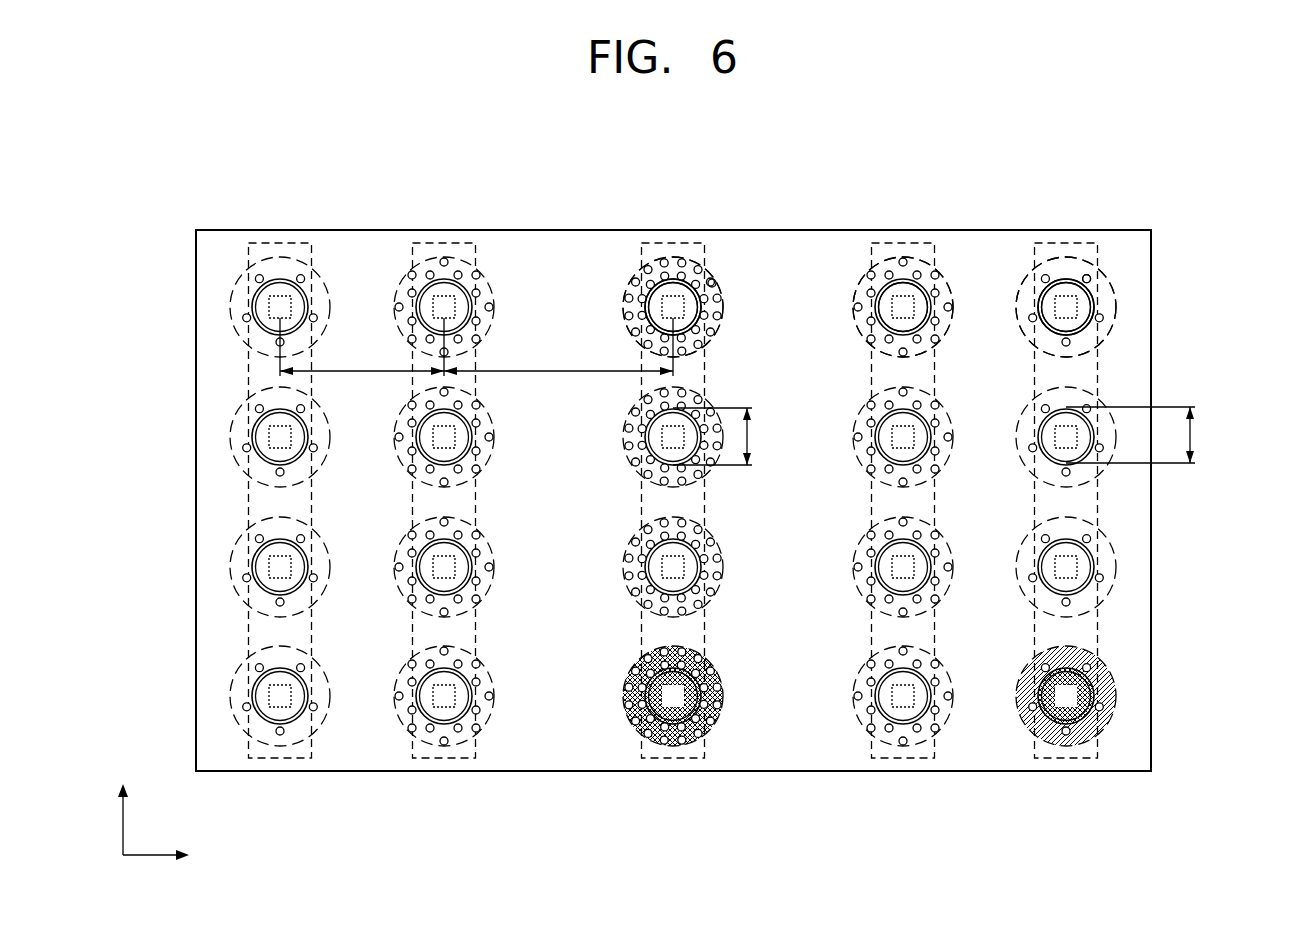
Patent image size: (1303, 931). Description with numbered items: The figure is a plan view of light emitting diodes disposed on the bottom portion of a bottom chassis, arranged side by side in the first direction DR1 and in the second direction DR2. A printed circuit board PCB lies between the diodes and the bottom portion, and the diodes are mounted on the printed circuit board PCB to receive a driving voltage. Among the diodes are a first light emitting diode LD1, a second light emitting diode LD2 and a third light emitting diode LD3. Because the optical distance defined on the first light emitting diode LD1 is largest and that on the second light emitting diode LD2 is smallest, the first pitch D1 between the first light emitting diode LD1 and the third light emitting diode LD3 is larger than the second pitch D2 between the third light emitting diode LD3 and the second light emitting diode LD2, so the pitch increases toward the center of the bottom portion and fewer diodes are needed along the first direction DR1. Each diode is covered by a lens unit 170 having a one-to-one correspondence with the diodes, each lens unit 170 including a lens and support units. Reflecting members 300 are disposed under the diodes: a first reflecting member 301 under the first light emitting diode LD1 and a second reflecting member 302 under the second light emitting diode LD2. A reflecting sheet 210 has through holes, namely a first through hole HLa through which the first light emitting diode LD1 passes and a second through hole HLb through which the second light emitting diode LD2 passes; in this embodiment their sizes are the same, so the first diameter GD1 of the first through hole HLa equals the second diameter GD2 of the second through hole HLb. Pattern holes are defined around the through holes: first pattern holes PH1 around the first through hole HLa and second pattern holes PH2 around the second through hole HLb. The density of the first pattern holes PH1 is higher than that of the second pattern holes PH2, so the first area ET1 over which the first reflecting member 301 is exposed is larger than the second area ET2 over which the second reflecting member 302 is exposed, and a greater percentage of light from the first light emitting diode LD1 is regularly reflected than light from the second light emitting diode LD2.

The first light emitting diode LD1 is at (672, 296).
The second light emitting diode LD2 is at (276, 296).
The third light emitting diode LD3 is at (442, 296).
The lens unit 170 is at (689, 270).
The reflecting sheet 210 is at (357, 246).
The reflecting member 300 is at (858, 275).
The first reflecting member 301 is at (622, 313).
The second reflecting member 302 is at (1021, 280).
The first through hole HLa is at (657, 300).
The second through hole HLb is at (1083, 307).
The first pattern holes PH1 is at (715, 280).
The second pattern holes PH2 is at (1090, 278).
The printed circuit board PCB is at (1098, 375).
The first area ET1 is at (673, 745).
The second area ET2 is at (1066, 745).
The first diameter GD1 is at (737, 436).
The second diameter GD2 is at (1153, 435).
The first pitch D1 is at (558, 358).
The second pitch D2 is at (362, 358).
The first direction DR1 is at (180, 855).
The second direction DR2 is at (123, 808).